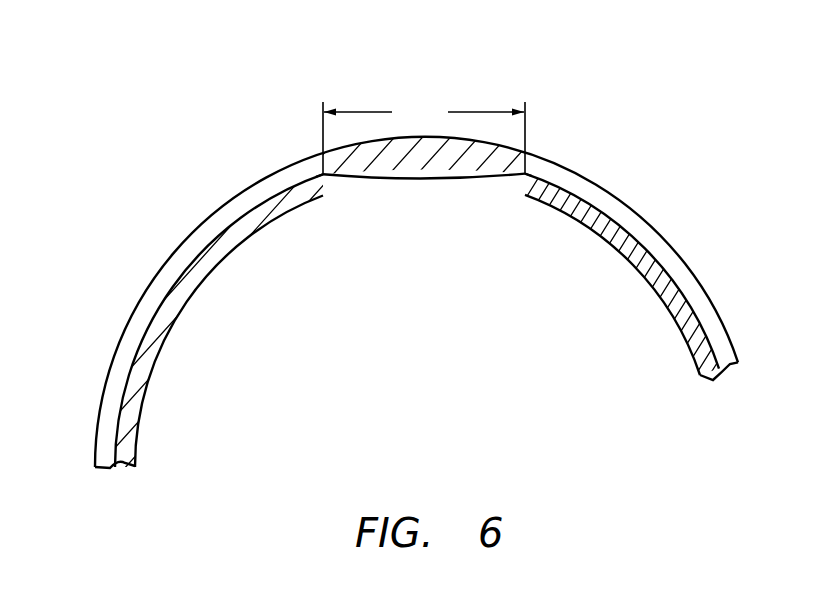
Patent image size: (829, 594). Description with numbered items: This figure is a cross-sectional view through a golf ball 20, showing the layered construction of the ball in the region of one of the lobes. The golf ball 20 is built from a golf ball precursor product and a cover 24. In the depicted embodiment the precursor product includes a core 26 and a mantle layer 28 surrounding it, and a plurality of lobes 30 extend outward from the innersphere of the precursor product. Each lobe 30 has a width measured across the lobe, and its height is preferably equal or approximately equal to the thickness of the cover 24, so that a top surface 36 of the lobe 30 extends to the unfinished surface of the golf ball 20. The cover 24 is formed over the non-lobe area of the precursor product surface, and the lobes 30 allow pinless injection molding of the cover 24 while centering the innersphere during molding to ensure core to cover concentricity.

The golf ball 20 is at (602, 131).
The cover 24 is at (638, 230).
The core 26 is at (426, 266).
The mantle layer 28 is at (607, 231).
The lobe 30 is at (463, 140).
The top surface 36 is at (347, 144).